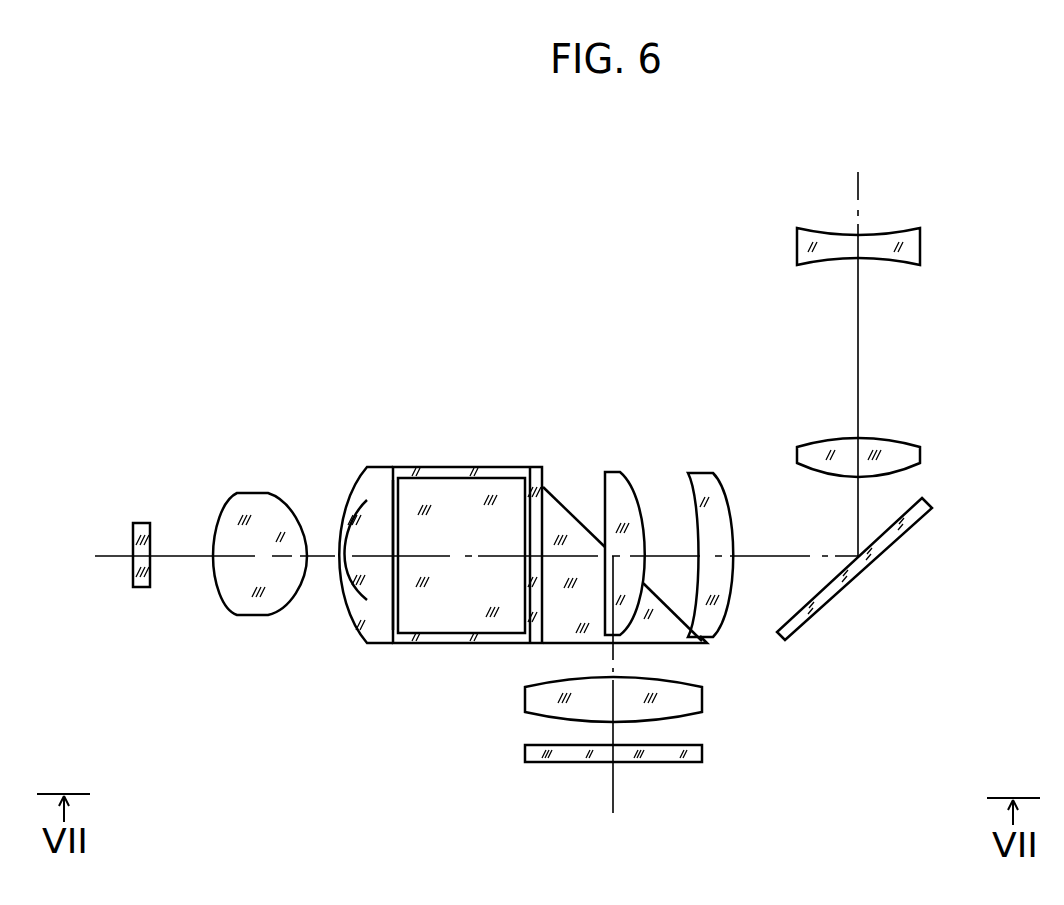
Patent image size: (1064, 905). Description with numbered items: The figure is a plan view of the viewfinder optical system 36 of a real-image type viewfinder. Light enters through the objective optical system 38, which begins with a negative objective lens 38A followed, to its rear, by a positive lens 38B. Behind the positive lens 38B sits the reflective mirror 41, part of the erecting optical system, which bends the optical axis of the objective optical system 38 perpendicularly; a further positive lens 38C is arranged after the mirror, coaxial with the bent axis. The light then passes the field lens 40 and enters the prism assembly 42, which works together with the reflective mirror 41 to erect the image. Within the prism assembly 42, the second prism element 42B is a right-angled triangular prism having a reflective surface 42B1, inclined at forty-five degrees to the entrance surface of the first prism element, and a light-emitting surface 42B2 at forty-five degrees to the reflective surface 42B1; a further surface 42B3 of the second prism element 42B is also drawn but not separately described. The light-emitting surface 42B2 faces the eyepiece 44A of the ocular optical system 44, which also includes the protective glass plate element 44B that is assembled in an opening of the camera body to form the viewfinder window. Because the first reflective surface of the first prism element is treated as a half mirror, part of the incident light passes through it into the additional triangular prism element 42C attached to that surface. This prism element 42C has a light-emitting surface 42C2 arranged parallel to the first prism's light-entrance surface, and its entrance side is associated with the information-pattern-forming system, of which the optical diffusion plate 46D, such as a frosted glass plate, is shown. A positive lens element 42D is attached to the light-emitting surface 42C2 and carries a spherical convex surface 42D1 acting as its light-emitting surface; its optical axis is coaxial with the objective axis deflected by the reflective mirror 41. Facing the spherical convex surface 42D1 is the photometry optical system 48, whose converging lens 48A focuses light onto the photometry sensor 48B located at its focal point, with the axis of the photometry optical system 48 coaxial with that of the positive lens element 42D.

The viewfinder optical system 36 is at (457, 367).
The objective optical system 38 is at (873, 435).
The negative objective lens 38A is at (922, 245).
The positive lens 38B is at (922, 455).
The positive lens 38C is at (720, 515).
The field lens 40 is at (620, 490).
The reflective mirror 41 is at (842, 594).
The prism assembly 42 is at (514, 561).
The second prism element 42B is at (650, 645).
The reflective surface 42B1 is at (580, 520).
The light-emitting surface 42B2 is at (578, 648).
The entrance surface of prism 42B3 is at (514, 494).
The additional triangular prism element 42C is at (460, 467).
The light-emitting surface 42C2 is at (393, 510).
The positive lens element 42D is at (378, 467).
The spherical convex surface 42D1 is at (347, 612).
The ocular optical system 44 is at (671, 768).
The eyepiece 44A is at (702, 700).
The protective glass plate element 44B is at (660, 763).
The optical diffusion plate 46D is at (433, 612).
The photometry optical system 48 is at (210, 543).
The converging lens 48A is at (252, 617).
The photometry sensor 48B is at (141, 588).